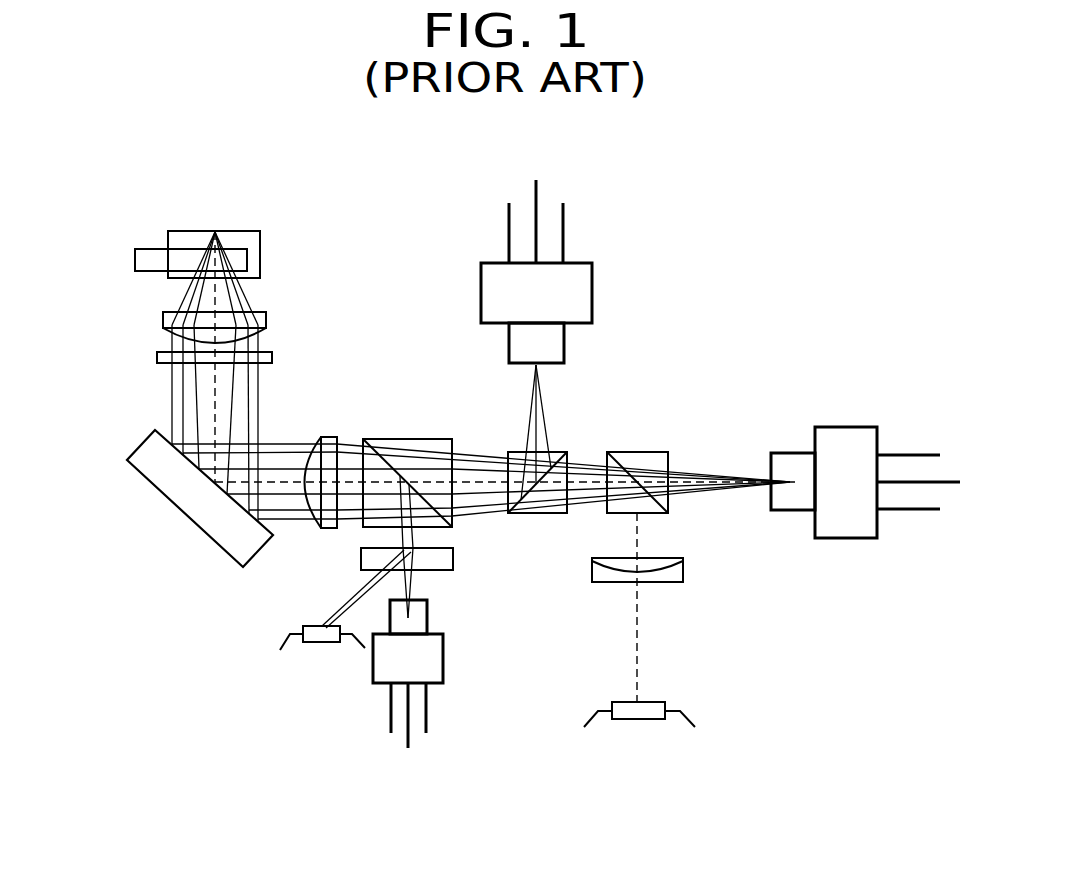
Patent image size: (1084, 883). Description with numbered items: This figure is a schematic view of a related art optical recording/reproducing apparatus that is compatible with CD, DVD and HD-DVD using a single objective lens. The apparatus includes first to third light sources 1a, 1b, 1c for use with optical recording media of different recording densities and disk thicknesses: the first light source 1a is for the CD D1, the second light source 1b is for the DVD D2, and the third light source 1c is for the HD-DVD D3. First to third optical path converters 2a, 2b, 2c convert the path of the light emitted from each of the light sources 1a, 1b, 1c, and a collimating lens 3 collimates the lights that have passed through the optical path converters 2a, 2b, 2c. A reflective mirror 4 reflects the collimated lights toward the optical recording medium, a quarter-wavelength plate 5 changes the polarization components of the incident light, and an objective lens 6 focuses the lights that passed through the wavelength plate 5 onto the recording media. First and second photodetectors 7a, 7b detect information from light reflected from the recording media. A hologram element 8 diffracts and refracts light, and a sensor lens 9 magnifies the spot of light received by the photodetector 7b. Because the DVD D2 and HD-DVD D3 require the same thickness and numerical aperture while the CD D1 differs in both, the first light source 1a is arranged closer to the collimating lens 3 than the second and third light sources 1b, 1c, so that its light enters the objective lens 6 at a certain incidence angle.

The first light source 1a is at (443, 661).
The second light source 1b is at (592, 292).
The third light source 1c is at (845, 538).
The first optical path converter 2a is at (407, 439).
The second optical path converter 2b is at (562, 452).
The third optical path converter 2c is at (638, 452).
The collimating lens 3 is at (330, 437).
The reflective mirror 4 is at (183, 515).
The λ/4 wavelength plate 5 is at (157, 357).
The objective lens 6 is at (163, 320).
The first photodetector 7a is at (317, 642).
The second photodetector 7b is at (633, 719).
The hologram element 8 is at (453, 560).
The sensor lens 9 is at (683, 571).
The CD D1 is at (187, 231).
The DVD D2 is at (135, 259).
The HD-DVD D3 is at (143, 260).